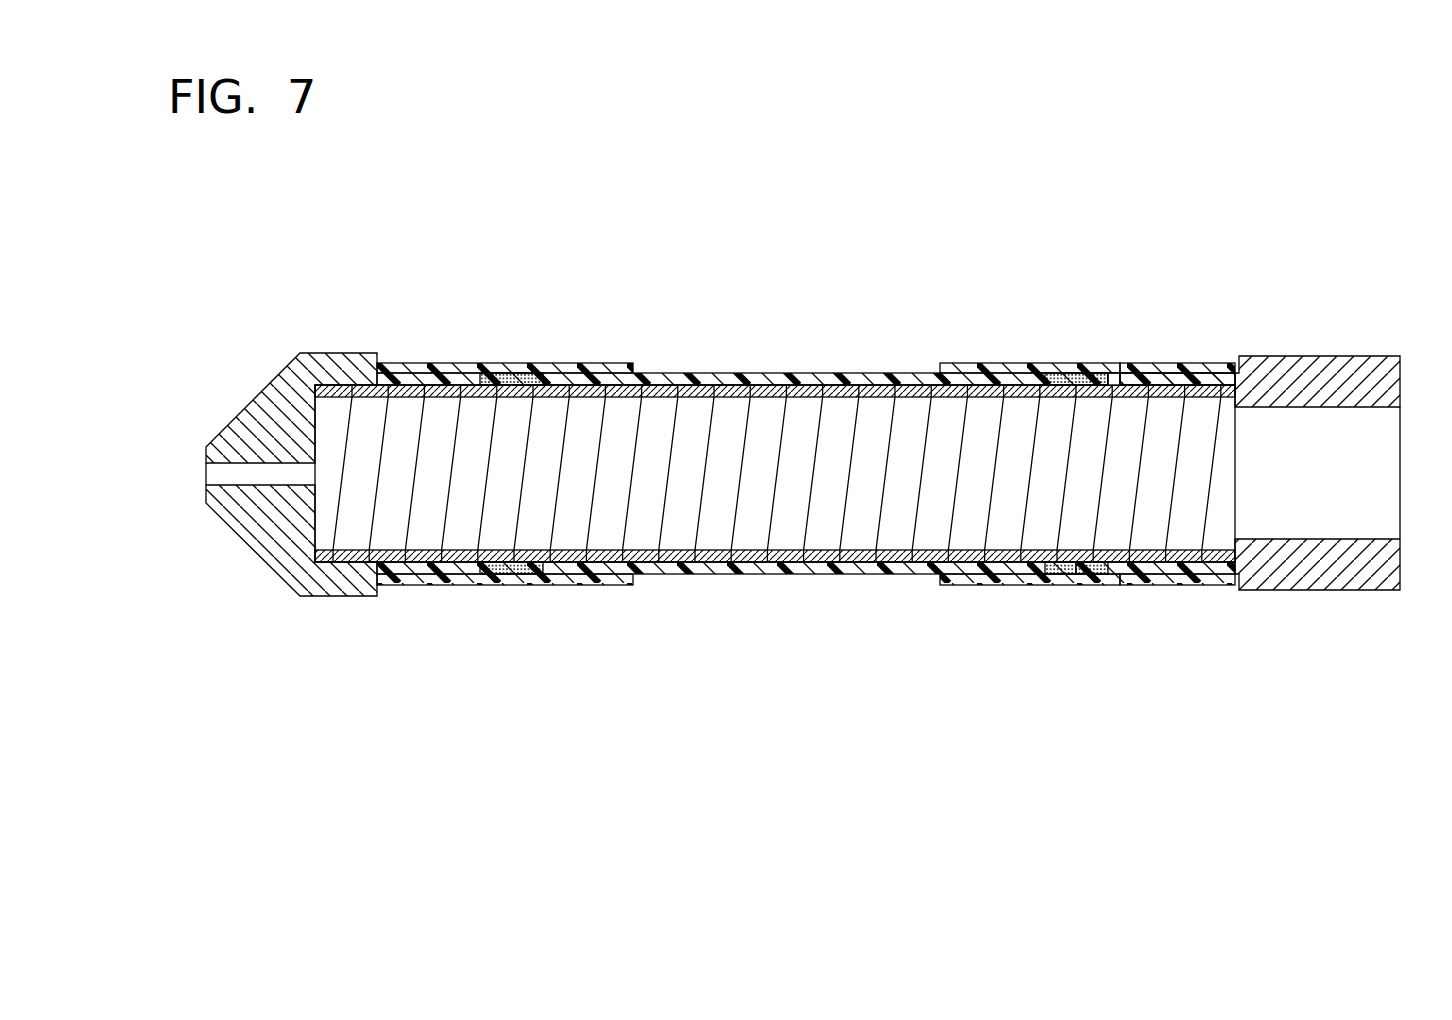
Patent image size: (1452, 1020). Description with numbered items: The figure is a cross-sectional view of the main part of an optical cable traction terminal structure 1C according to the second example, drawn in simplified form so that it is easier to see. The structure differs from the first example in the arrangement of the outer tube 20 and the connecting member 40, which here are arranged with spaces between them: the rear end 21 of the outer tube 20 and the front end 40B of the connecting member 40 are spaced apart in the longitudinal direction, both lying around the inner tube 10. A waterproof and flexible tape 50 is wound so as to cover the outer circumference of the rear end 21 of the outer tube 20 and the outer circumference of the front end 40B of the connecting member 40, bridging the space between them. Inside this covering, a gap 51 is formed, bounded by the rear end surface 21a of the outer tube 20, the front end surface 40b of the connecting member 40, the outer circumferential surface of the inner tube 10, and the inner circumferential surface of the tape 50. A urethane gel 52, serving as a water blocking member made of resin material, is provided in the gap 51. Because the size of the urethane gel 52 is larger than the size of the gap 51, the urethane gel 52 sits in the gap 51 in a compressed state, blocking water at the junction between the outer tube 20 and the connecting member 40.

The optical cable traction terminal structure 1C is at (803, 401).
The inner tube 10 is at (775, 527).
The outer tube 20 is at (806, 416).
The rear end of the outer tube 21 is at (748, 429).
The rear end surface of the outer tube 21a is at (1057, 329).
The front end surface of the connecting member 40b is at (1093, 316).
The front end of the connecting member 40B is at (1177, 329).
The connecting member 40 is at (1317, 425).
The tape 50 is at (1177, 429).
The gap 51 is at (1095, 615).
The urethane gel 52 is at (1044, 615).